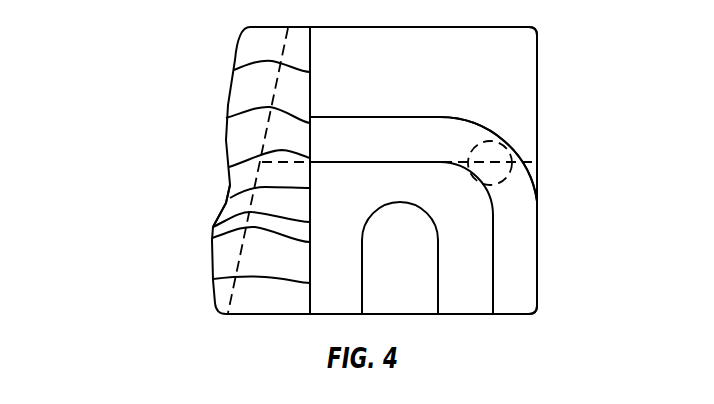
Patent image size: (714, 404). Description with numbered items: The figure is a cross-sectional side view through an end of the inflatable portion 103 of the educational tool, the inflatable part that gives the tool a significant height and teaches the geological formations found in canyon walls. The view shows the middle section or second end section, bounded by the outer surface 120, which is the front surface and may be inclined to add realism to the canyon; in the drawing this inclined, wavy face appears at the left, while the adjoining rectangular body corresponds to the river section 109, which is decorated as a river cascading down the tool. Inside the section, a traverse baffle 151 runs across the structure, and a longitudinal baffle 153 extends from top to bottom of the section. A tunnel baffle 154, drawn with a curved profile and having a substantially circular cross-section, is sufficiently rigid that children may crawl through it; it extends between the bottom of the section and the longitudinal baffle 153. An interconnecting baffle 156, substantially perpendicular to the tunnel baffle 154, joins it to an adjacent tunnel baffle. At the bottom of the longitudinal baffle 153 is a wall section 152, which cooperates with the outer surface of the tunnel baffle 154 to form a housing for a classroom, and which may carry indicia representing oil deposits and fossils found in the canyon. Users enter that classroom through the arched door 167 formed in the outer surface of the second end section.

The inflatable portion 103 is at (150, 53).
The river section 109 is at (542, 42).
The outer surface 120 is at (235, 263).
The traverse baffle 151 is at (522, 145).
The wall section 152 is at (313, 177).
The longitudinal baffle 153 is at (310, 75).
The tunnel baffle 154 is at (477, 127).
The interconnecting baffle 156 is at (538, 205).
The door 167 is at (438, 244).